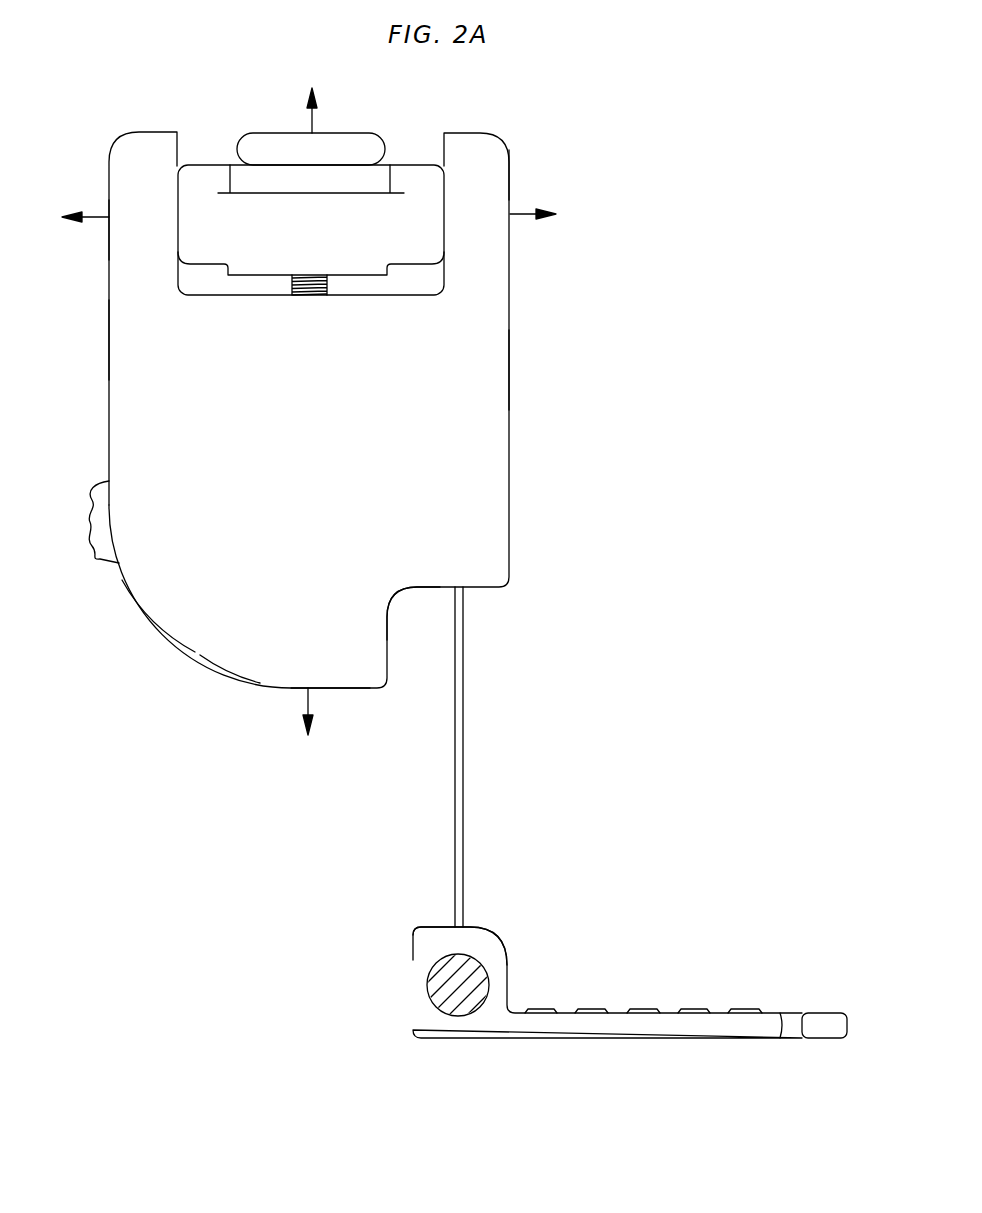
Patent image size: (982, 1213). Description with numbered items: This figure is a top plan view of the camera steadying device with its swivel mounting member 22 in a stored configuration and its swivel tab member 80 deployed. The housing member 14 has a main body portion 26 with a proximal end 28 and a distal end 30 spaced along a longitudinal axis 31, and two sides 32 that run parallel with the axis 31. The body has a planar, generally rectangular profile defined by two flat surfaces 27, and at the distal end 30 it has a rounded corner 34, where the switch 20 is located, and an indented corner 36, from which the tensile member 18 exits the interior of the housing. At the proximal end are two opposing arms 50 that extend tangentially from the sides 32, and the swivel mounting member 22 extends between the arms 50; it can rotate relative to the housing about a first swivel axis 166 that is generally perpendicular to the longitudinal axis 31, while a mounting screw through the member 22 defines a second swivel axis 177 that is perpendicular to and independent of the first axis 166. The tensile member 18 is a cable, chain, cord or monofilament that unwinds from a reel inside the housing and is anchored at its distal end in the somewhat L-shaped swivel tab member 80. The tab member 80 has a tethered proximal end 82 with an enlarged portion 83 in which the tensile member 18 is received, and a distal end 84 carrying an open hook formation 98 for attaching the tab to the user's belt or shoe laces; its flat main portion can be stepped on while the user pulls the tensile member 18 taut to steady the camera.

The housing member 14 is at (230, 676).
The tensile member 18 is at (463, 695).
The switch 20 is at (102, 563).
The swivel mounting member 22 is at (412, 163).
The main body portion 26 is at (422, 505).
The flat surfaces 27 is at (295, 433).
The proximal end 28 is at (400, 294).
The distal end 30 is at (290, 688).
The longitudinal axis 31 is at (310, 700).
The sides 32 is at (109, 333).
The rounded corner 34 is at (168, 635).
The indented corner 36 is at (397, 605).
The arms 50 is at (109, 239).
The swivel tab member 80 is at (585, 938).
The tethered proximal end 82 is at (413, 983).
The enlarged portion 83 is at (413, 928).
The distal end 84 is at (645, 1009).
The open hook formation 98 is at (827, 1013).
The first swivel axis 166 is at (102, 214).
The second swivel axis 177 is at (312, 122).